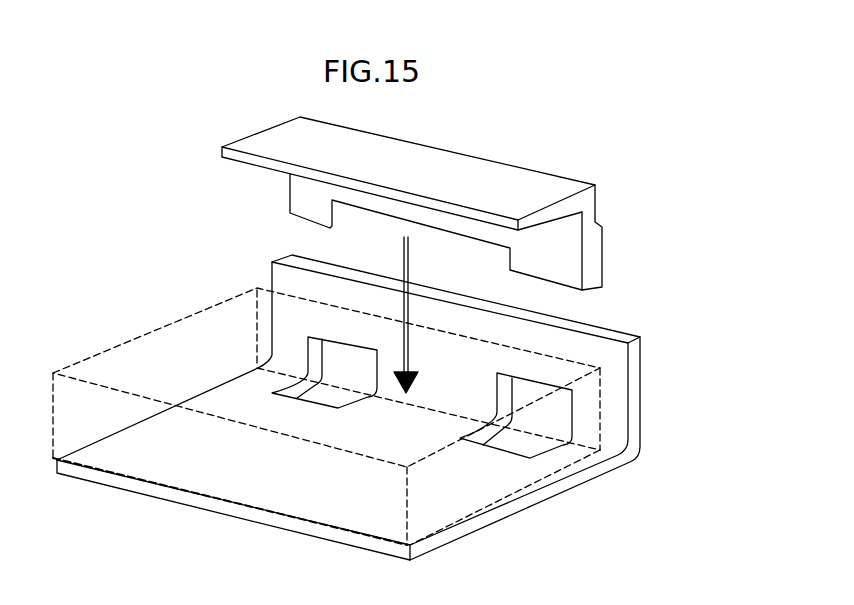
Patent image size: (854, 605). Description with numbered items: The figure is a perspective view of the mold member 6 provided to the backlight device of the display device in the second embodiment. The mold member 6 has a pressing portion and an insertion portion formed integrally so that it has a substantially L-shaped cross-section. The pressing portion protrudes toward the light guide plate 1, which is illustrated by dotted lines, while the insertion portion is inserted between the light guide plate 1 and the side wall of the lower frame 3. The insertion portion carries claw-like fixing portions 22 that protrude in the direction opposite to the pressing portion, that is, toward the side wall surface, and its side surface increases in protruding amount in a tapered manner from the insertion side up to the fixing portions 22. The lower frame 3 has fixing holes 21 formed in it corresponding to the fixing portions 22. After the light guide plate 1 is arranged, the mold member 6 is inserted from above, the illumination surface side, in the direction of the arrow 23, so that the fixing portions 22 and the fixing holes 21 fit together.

The light guide plate 1 is at (177, 357).
The lower frame 3 is at (480, 520).
The mold member 6 is at (442, 192).
The fixing holes 21 is at (337, 365).
The fixing portions 22 is at (615, 220).
The arrow 23 is at (403, 263).